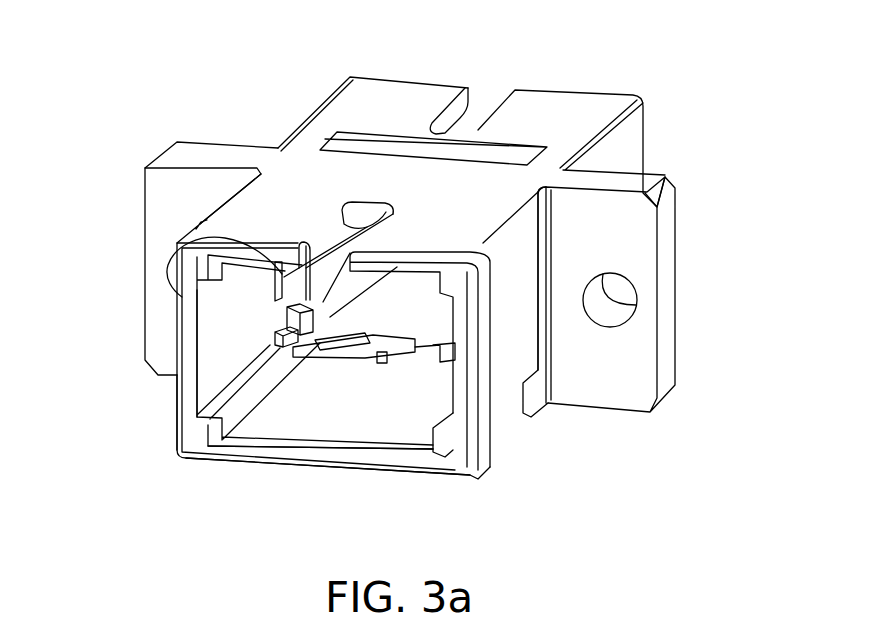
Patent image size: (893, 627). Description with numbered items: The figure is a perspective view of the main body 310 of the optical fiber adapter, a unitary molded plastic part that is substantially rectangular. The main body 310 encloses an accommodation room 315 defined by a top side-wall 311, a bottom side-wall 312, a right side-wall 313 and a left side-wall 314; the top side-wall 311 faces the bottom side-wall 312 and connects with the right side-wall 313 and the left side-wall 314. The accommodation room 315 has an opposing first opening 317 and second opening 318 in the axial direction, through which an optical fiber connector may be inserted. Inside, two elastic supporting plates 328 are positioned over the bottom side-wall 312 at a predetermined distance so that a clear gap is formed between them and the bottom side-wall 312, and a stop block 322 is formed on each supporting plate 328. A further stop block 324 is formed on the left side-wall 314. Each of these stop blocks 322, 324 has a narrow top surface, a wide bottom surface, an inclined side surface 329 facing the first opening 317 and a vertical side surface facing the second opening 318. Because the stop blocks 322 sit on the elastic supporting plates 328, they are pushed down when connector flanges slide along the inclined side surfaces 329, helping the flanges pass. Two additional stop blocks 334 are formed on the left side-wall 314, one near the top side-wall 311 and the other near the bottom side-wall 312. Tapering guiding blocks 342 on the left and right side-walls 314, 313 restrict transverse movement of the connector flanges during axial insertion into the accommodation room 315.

The main body 310 is at (127, 117).
The top side-wall 311 is at (288, 180).
The bottom side-wall 312 is at (297, 460).
The right side-wall 313 is at (458, 335).
The left side-wall 314 is at (187, 370).
The accommodation room 315 is at (400, 387).
The first opening 317 is at (243, 342).
The second opening 318 is at (500, 85).
The stop block 322 is at (337, 342).
The stop block 324 is at (275, 262).
The elastic supporting plate 328 is at (360, 350).
The inclined side surface 329 is at (180, 245).
The stop block 334 is at (240, 320).
The guiding block 342 is at (283, 343).